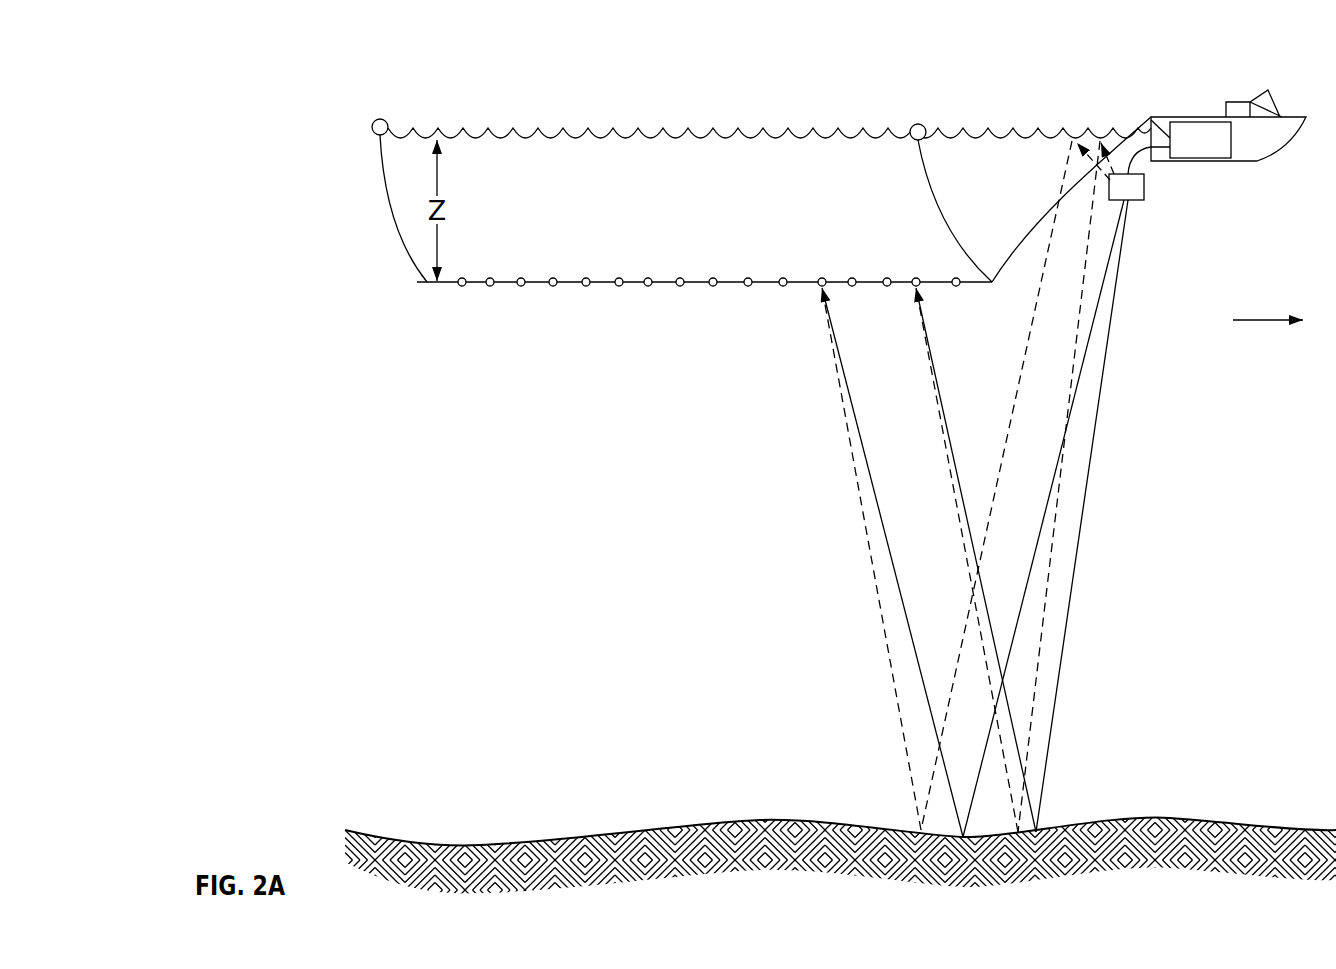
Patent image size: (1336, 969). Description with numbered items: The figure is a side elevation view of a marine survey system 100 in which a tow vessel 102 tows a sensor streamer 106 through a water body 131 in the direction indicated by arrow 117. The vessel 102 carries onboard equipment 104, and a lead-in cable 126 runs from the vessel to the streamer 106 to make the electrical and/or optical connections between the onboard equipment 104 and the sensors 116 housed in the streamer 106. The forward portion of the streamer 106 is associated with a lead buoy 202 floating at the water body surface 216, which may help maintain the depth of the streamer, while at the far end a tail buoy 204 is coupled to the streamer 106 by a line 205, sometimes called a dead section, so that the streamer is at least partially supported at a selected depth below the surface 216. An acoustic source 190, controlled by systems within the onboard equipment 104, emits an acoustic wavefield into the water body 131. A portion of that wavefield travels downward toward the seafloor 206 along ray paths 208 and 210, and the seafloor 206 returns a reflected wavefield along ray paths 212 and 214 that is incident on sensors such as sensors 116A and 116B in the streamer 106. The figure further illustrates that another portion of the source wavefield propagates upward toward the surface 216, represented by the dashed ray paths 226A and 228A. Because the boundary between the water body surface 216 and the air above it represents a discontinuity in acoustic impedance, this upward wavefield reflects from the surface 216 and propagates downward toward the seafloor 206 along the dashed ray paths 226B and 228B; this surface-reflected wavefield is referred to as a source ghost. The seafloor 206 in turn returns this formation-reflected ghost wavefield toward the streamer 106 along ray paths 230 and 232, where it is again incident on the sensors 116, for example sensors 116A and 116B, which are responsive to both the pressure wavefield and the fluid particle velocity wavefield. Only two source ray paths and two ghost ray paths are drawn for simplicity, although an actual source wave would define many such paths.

The marine survey system 100 is at (287, 112).
The tow vessel 102 is at (1197, 118).
The onboard equipment 104 is at (1222, 151).
The sensor streamer 106 is at (490, 288).
The sensors 116 is at (713, 287).
The sensor 116A is at (916, 290).
The sensor 116B is at (822, 290).
The arrow 117 is at (1252, 320).
The lead-in cable 126 is at (1035, 228).
The water body 131 is at (1298, 521).
The acoustic source 190 is at (1144, 190).
The lead buoy 202 is at (914, 124).
The tail buoy 204 is at (372, 130).
The line 205 is at (392, 208).
The seafloor 206 is at (655, 822).
The ray path 208 is at (1078, 555).
The ray path 210 is at (1050, 498).
The ray path 212 is at (972, 543).
The ray path 214 is at (868, 473).
The water body surface 216 is at (760, 130).
The ray path 226A is at (1100, 140).
The ray path 226B is at (1083, 318).
The ray path 228A is at (1076, 142).
The ray path 228B is at (1025, 362).
The ray path 230 is at (952, 478).
The ray path 232 is at (868, 540).